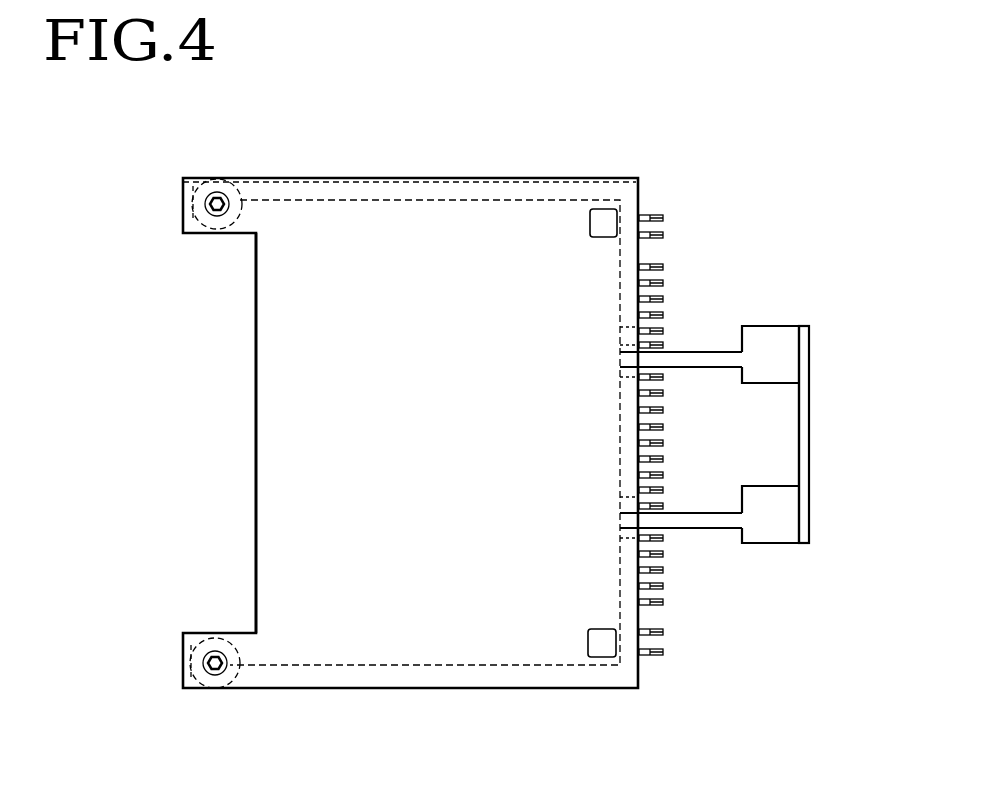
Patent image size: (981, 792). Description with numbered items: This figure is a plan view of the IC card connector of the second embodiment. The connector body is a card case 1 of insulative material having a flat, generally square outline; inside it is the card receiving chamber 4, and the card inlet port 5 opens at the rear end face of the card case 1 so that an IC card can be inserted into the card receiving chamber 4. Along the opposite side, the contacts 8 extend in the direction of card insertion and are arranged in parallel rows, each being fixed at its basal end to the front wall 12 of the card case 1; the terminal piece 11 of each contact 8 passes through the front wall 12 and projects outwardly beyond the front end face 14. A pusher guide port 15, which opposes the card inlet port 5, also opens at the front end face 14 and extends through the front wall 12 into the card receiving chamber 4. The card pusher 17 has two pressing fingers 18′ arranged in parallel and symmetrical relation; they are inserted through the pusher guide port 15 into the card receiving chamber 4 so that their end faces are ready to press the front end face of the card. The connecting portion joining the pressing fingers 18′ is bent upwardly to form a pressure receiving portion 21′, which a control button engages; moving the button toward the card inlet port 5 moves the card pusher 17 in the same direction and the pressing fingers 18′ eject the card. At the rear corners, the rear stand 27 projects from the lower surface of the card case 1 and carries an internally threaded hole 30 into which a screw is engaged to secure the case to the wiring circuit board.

The card case 1 is at (531, 178).
The card receiving chamber 4 is at (396, 356).
The card inlet port 5 is at (250, 430).
The contact 8 is at (640, 656).
The terminal piece 11 is at (666, 218).
The front wall 12 is at (634, 614).
The front end face 14 is at (645, 252).
The pusher guide port 15 is at (635, 325).
The card pusher 17 is at (810, 395).
The pressing fingers 18′ is at (695, 360).
The pressure receiving portion 21′ is at (810, 440).
The rear stand 27 is at (233, 688).
The internally threaded hole 30 is at (212, 688).